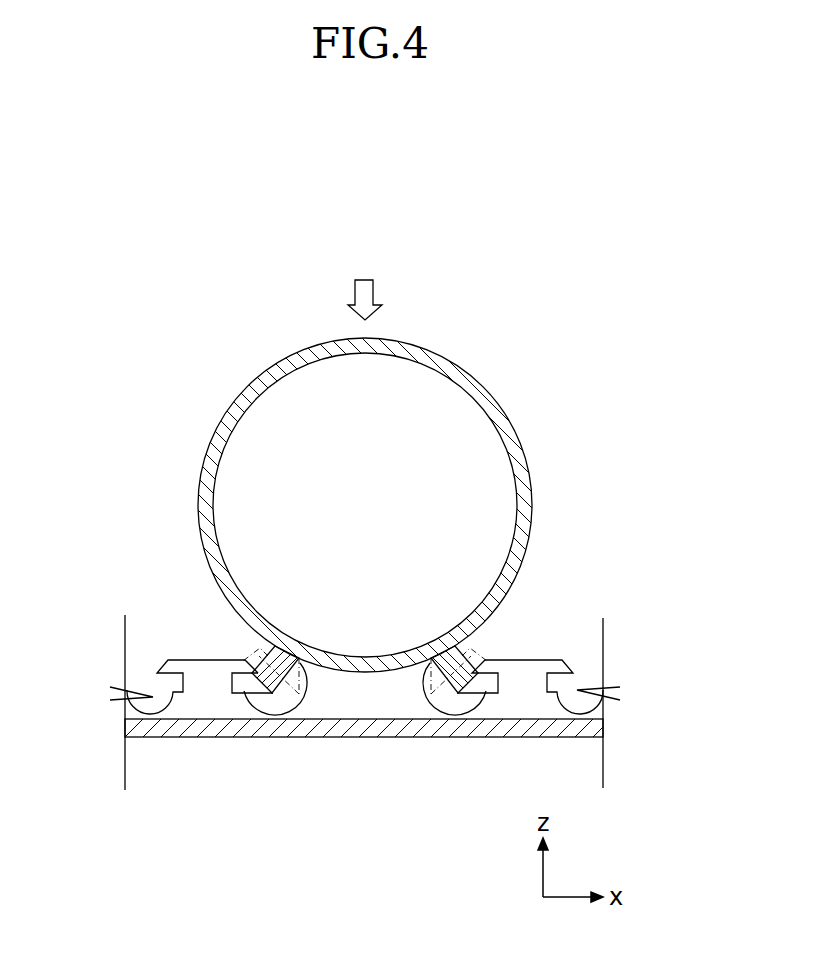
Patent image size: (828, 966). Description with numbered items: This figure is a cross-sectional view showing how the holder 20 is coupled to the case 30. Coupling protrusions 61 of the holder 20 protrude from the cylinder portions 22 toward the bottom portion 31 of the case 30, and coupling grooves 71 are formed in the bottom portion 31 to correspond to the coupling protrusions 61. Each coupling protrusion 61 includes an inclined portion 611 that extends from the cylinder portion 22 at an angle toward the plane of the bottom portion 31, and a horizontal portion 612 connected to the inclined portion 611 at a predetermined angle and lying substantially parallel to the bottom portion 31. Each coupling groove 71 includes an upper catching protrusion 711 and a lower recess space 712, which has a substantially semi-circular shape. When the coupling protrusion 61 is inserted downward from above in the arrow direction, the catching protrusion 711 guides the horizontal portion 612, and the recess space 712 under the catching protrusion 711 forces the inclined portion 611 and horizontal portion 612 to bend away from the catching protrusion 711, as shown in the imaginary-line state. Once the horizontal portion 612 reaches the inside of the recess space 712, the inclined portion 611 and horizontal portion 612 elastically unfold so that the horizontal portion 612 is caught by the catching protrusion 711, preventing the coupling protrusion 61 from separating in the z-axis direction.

The holder 20 is at (413, 509).
The cylinder portion 22 is at (485, 402).
The case 30 is at (368, 772).
The bottom portion 31 is at (426, 727).
The coupling protrusion 61 is at (335, 838).
The inclined portion 611 is at (299, 660).
The horizontal portion 612 is at (243, 673).
The coupling groove 71 is at (183, 543).
The catching protrusion 711 is at (252, 668).
The recess space 712 is at (243, 666).